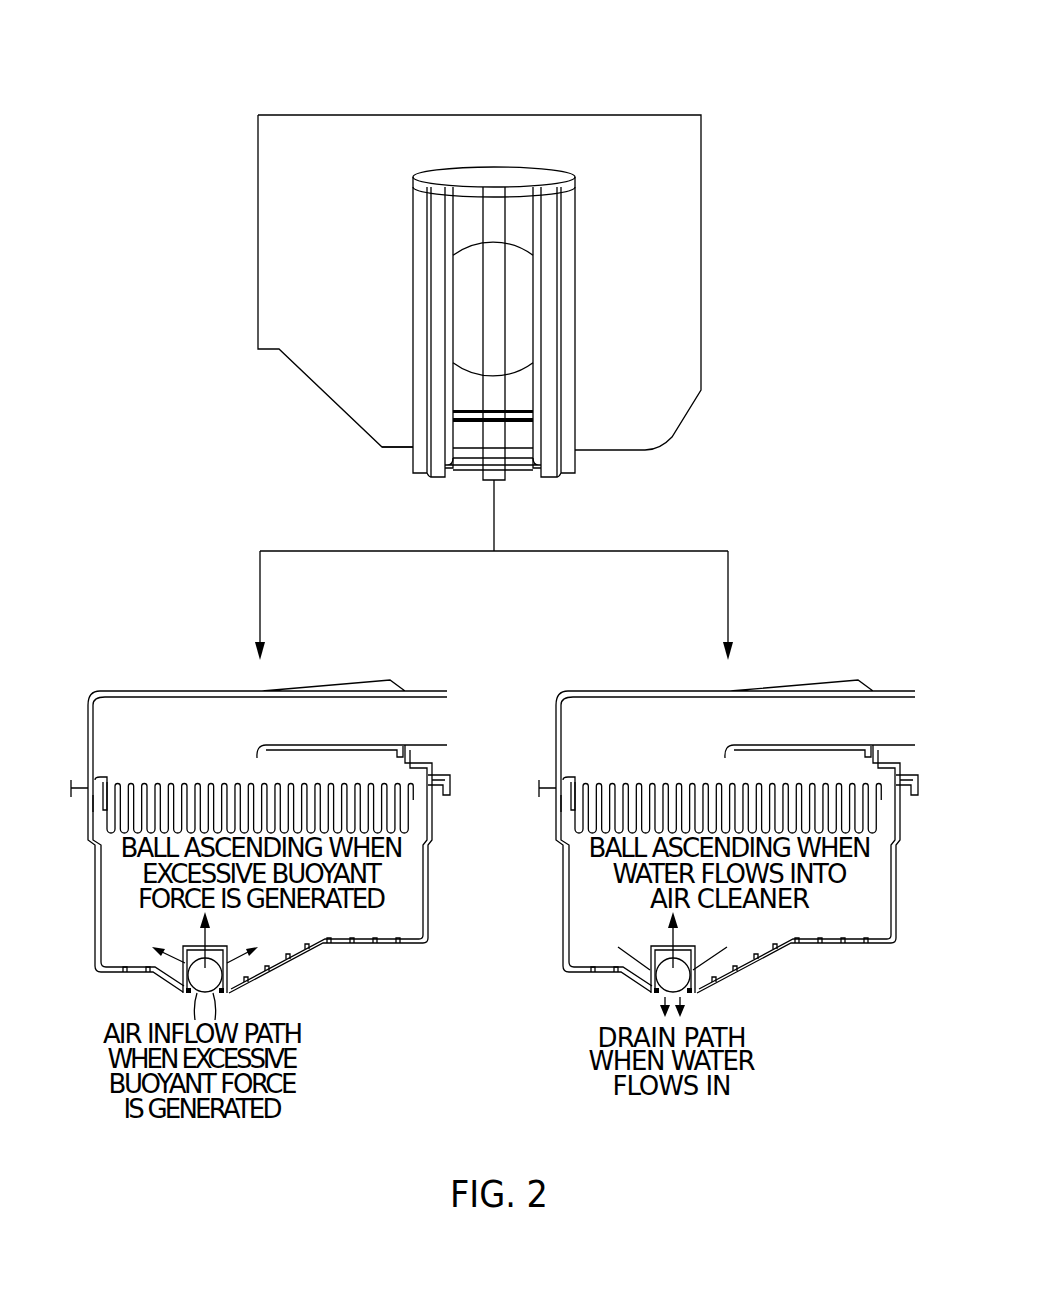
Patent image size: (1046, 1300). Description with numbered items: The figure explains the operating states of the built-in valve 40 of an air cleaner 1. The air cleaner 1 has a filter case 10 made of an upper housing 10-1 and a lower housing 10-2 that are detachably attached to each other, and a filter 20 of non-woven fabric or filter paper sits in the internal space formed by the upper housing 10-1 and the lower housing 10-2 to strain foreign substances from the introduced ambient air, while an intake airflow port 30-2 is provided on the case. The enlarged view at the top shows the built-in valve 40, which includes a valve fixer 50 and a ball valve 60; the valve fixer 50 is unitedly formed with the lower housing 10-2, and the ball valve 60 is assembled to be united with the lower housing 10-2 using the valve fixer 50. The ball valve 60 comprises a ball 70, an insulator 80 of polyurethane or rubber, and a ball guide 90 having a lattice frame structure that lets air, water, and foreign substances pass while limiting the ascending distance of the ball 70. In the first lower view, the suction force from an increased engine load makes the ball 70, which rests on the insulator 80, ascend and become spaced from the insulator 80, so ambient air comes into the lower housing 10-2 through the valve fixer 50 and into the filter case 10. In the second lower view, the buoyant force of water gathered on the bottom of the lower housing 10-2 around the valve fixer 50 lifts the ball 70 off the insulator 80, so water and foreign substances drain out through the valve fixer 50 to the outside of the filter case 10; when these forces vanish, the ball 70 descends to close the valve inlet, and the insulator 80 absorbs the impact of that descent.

The air cleaner 1 is at (358, 636).
The filter case 10 is at (165, 604).
The upper housing 10-1 is at (160, 690).
The lower housing 10-2 is at (258, 173).
The filter 20 is at (413, 817).
The intake airflow port 30-2 is at (424, 690).
The built-in valve 40 is at (292, 79).
The valve fixer 50 is at (397, 449).
The ball valve 60 is at (826, 300).
The ball 70 is at (525, 302).
The insulator 80 is at (527, 433).
The ball guide 90 is at (567, 363).